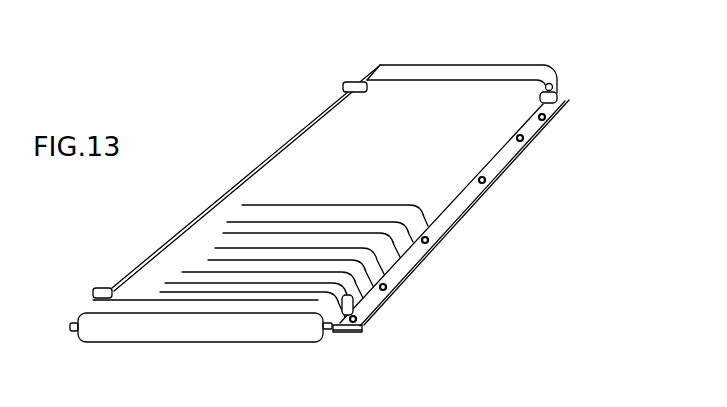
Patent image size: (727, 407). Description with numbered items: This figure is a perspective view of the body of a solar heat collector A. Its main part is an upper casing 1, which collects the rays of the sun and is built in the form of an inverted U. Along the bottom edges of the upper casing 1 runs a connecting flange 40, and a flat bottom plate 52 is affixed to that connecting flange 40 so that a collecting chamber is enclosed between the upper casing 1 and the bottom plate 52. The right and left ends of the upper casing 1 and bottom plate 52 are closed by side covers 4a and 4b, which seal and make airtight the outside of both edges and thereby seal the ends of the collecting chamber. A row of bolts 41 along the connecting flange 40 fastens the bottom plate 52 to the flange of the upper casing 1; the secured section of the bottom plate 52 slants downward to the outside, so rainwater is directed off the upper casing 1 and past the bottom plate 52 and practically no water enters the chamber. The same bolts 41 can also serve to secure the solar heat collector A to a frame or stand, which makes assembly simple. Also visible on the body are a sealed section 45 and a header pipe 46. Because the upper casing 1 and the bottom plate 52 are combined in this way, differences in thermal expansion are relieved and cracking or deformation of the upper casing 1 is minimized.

The upper casing 1 is at (242, 197).
The solar heat collector A is at (263, 133).
The side cover 4a is at (265, 333).
The side cover 4b is at (527, 72).
The connecting flange 40 is at (448, 222).
The bolts 41 is at (532, 142).
The sealed section 45 is at (437, 77).
The header pipe 46 is at (559, 93).
The bottom plate 52 is at (344, 335).